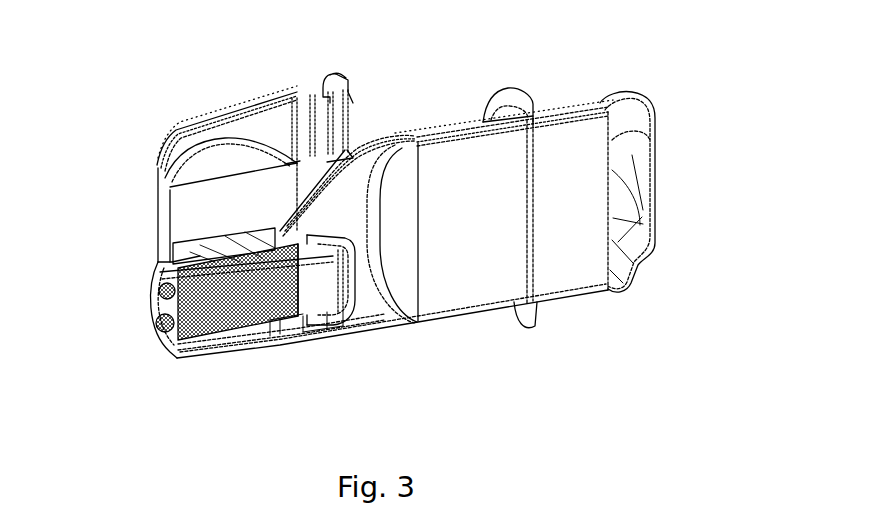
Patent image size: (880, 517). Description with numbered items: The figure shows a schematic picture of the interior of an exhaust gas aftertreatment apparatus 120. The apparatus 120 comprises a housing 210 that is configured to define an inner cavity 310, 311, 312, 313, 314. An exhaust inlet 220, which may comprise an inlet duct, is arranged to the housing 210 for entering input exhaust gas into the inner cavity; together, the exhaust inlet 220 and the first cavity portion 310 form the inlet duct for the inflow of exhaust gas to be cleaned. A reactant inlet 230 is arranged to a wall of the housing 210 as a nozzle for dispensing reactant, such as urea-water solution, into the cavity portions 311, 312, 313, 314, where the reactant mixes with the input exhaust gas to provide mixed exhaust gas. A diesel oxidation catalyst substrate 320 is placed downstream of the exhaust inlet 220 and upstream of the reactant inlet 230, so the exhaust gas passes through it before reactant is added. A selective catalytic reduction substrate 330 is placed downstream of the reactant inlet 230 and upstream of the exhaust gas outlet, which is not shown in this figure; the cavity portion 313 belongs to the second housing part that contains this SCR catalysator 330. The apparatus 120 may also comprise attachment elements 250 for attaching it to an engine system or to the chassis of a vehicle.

The exhaust gas aftertreatment apparatus 120 is at (165, 84).
The housing 210 is at (393, 136).
The exhaust inlet 220 is at (347, 88).
The reactant inlet 230 is at (164, 320).
The attachment elements 250 is at (513, 93).
The inner cavity part 310 is at (252, 128).
The inner cavity part 311 is at (197, 248).
The inner cavity part 312 is at (240, 336).
The inner cavity part 313 is at (373, 317).
The inner cavity part 314 is at (632, 178).
The diesel oxidation catalyst substrate 320 is at (173, 212).
The selective catalytic reduction substrate 330 is at (473, 297).